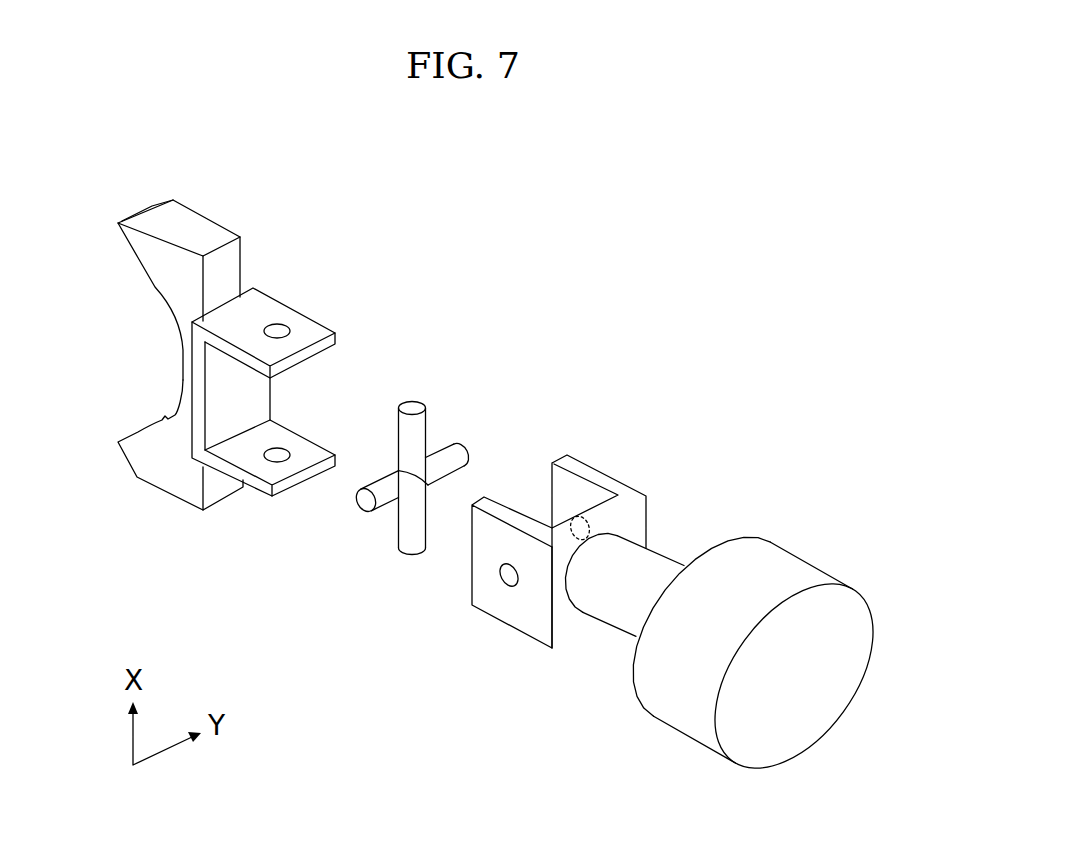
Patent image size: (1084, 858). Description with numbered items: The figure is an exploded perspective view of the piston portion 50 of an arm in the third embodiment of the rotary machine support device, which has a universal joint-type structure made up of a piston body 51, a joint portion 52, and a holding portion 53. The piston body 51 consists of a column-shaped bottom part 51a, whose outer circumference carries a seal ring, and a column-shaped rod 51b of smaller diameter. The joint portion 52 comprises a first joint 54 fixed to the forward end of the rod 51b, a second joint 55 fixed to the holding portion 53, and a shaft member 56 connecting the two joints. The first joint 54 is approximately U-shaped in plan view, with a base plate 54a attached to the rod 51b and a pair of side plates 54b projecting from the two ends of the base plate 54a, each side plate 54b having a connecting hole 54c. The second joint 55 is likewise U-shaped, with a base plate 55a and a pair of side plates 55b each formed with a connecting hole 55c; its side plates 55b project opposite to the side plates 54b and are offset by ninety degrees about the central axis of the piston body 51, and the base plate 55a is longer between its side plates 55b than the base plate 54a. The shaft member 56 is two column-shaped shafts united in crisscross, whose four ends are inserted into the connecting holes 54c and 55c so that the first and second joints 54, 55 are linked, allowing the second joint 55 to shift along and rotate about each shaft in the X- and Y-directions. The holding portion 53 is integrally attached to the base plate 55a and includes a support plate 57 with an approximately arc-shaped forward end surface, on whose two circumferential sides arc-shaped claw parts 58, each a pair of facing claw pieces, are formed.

The piston portion 50 is at (644, 378).
The piston body 51 is at (563, 757).
The bottom part 51a is at (652, 698).
The rod 51b is at (617, 624).
The joint portion 52 is at (464, 316).
The holding portion 53 is at (219, 198).
The first joint 54 is at (641, 468).
The base plate 54a is at (638, 522).
The side plates 54b is at (597, 464).
The connecting hole 54c is at (578, 526).
The second joint 55 is at (324, 265).
The base plate 55a is at (258, 396).
The side plates 55b is at (314, 328).
The connecting hole 55c is at (284, 334).
The shaft member 56 is at (428, 425).
The support plate 57 is at (182, 338).
The claw parts 58 is at (124, 258).